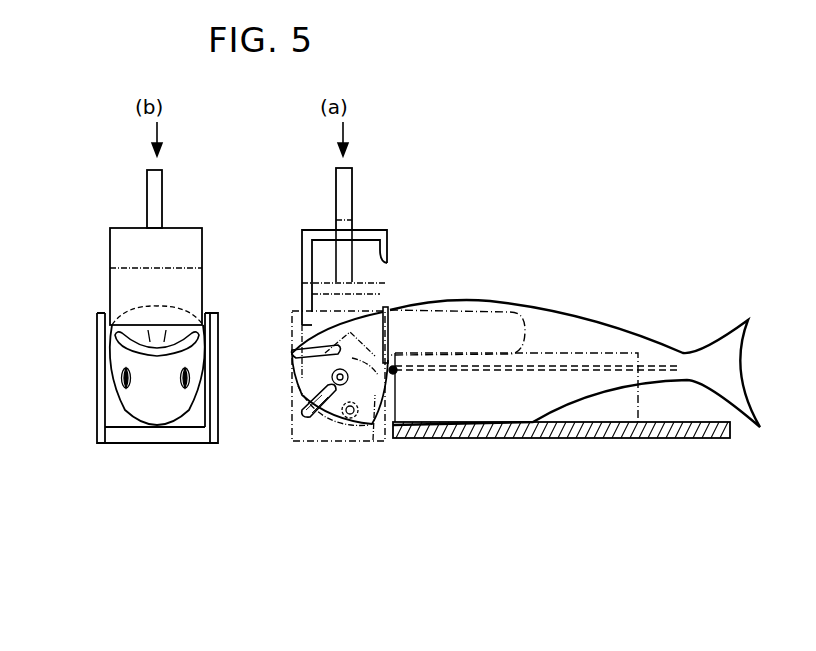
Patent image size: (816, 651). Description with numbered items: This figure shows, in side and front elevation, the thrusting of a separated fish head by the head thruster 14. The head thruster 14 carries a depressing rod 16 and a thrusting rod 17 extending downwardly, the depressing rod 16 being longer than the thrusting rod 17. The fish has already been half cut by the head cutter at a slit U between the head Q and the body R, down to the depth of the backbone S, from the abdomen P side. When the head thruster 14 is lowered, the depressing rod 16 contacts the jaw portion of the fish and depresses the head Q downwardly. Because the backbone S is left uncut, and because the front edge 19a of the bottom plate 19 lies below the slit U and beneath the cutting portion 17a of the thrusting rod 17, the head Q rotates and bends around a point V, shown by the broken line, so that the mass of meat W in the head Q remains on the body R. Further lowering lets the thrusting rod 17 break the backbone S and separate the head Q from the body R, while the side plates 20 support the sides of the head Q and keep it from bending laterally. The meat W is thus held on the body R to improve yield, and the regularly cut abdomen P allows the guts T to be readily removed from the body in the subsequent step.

The head thruster 14 is at (158, 188).
The depressing rod 16 is at (190, 287).
The thrusting rod 17 is at (382, 250).
The cutting portion 17a is at (386, 268).
The bottom plate 19 is at (178, 437).
The front edge 19a is at (417, 440).
The side plates 20 is at (291, 377).
The head Q is at (150, 408).
The abdomen P is at (600, 342).
The guts T is at (513, 326).
The slit U is at (393, 337).
The point V is at (394, 372).
The mass of meat W is at (373, 441).
The backbone S is at (517, 372).
The body R is at (620, 387).